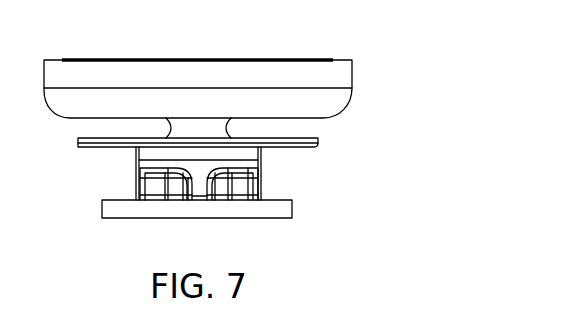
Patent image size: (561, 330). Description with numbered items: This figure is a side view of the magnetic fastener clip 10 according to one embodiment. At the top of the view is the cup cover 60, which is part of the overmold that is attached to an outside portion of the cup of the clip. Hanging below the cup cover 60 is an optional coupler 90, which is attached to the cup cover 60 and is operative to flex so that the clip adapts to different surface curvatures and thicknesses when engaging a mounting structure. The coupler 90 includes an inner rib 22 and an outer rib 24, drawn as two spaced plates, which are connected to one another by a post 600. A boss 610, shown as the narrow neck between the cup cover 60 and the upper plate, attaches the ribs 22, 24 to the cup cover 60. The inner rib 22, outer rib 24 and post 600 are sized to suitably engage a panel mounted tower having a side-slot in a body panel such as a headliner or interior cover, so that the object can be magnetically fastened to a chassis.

The magnetic fastener clip 10 is at (372, 111).
The cup cover 60 is at (347, 75).
The boss 610 is at (207, 128).
The inner rib 22 is at (105, 147).
The coupler 90 is at (345, 130).
The post 600 is at (252, 163).
The outer rib 24 is at (273, 210).